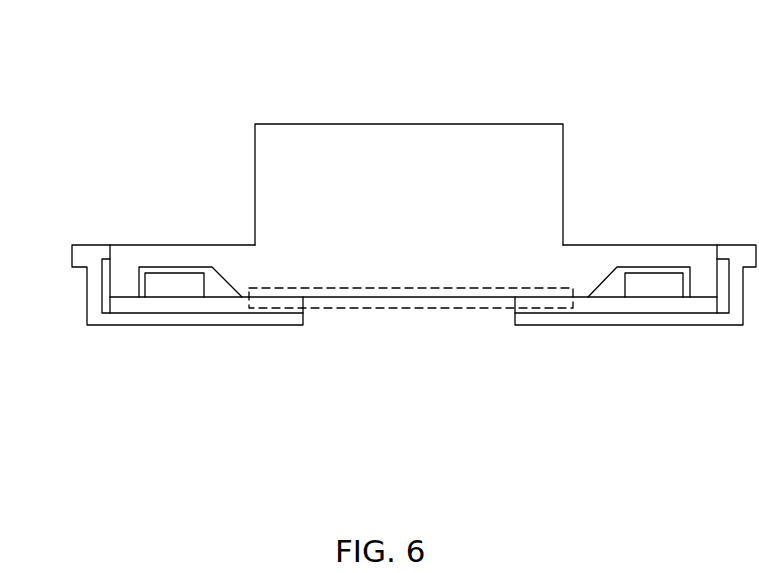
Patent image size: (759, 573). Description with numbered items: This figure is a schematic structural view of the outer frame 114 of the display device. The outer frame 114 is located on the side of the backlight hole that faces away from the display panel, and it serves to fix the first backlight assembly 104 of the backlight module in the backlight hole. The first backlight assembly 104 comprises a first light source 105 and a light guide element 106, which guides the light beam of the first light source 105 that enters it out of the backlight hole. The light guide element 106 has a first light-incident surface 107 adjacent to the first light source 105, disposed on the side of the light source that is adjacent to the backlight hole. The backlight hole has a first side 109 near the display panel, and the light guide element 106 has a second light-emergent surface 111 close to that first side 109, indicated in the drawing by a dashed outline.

The first backlight assembly 104 is at (262, 408).
The first light source 105 is at (176, 287).
The light guide element 106 is at (373, 272).
The first light-incident surface 107 is at (597, 290).
The first side 109 is at (457, 123).
The second light-emergent surface 111 is at (430, 309).
The outer frame 114 is at (95, 292).